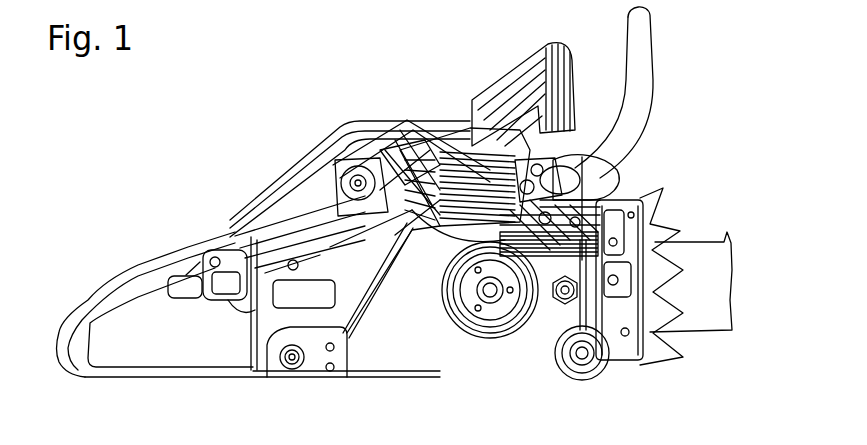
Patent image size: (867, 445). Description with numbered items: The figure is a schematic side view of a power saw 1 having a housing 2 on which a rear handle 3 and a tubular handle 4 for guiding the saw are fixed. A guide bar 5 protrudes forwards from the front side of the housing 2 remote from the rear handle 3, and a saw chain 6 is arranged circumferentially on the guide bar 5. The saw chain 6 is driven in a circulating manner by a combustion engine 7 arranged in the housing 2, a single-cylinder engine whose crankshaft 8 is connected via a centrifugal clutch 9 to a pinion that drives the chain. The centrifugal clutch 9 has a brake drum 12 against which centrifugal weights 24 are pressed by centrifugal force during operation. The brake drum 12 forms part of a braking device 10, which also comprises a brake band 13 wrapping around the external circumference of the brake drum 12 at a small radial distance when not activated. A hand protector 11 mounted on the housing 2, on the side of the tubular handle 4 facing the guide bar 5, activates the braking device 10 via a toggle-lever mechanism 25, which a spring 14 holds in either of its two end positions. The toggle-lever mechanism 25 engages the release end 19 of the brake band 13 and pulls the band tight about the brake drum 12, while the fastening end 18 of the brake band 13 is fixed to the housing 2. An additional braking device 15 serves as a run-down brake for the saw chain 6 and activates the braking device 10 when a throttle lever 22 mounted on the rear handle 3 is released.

The power saw 1 is at (211, 133).
The housing 2 is at (437, 128).
The rear handle 3 is at (122, 284).
The tubular handle 4 is at (532, 65).
The guide bar 5 is at (700, 314).
The saw chain 6 is at (702, 231).
The combustion engine 7 is at (477, 142).
The crankshaft 8 is at (490, 293).
The centrifugal clutch 9 is at (463, 347).
The braking device 10 is at (575, 200).
The hand protector 11 is at (640, 73).
The brake drum 12 is at (515, 333).
The brake band 13 is at (342, 168).
The spring 14 is at (395, 140).
The additional braking device 15 is at (233, 310).
The fastening end 18 is at (412, 230).
The release end 19 is at (583, 355).
The throttle lever 22 is at (210, 298).
The centrifugal weights 24 is at (447, 323).
The toggle-lever mechanism 25 is at (622, 200).